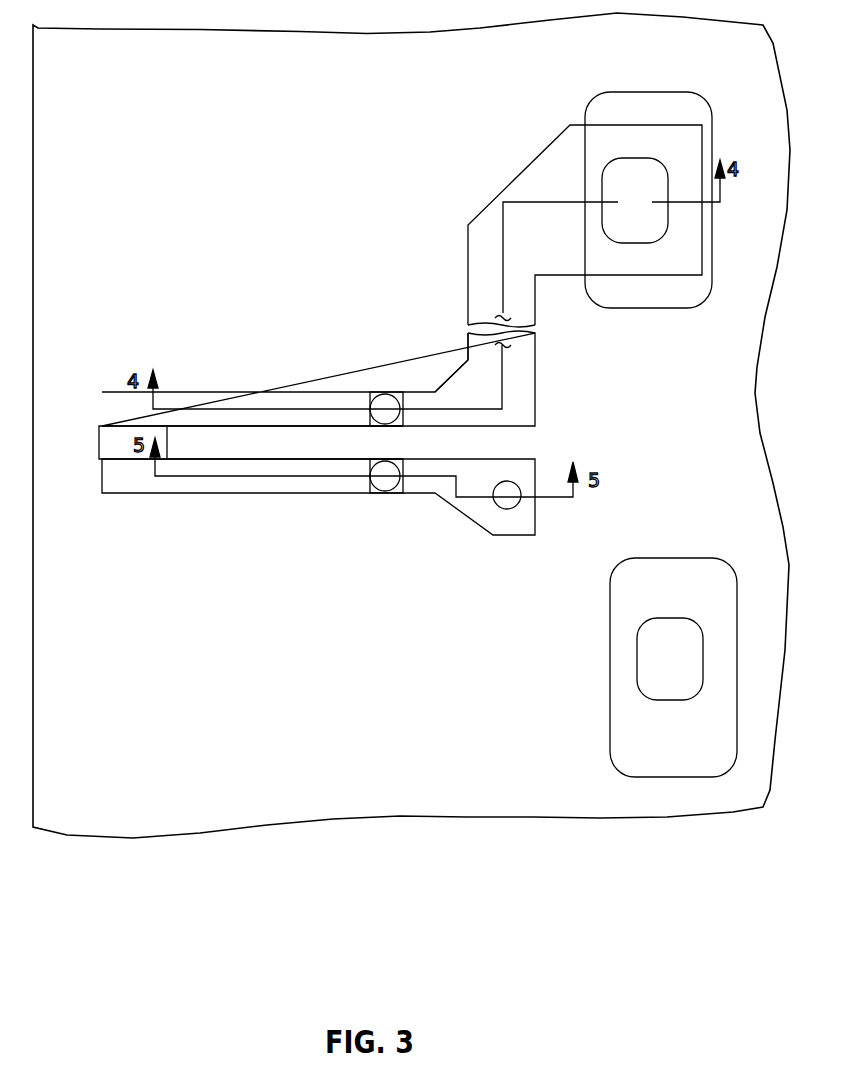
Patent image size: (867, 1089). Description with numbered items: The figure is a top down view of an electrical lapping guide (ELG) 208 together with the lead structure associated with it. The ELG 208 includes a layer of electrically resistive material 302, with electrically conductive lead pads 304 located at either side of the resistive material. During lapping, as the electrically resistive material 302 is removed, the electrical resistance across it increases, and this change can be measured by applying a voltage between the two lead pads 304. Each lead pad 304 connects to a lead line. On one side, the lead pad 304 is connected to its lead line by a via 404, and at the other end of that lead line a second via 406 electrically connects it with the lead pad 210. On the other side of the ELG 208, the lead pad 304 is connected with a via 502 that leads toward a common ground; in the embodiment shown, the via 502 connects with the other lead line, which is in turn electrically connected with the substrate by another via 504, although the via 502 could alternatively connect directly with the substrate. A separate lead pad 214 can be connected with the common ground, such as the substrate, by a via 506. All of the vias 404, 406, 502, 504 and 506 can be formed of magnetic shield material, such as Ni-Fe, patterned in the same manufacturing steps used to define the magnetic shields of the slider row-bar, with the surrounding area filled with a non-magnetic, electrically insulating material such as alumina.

The electrical lapping guide 208 is at (120, 388).
The lead pad 210 is at (640, 308).
The lead pad 214 is at (610, 629).
The electrically resistive material 302 is at (99, 445).
The lead pads 304 is at (260, 398).
The via 404 is at (377, 396).
The second via 406 is at (613, 162).
The via 502 is at (383, 491).
The via 504 is at (512, 508).
The via 506 is at (668, 700).